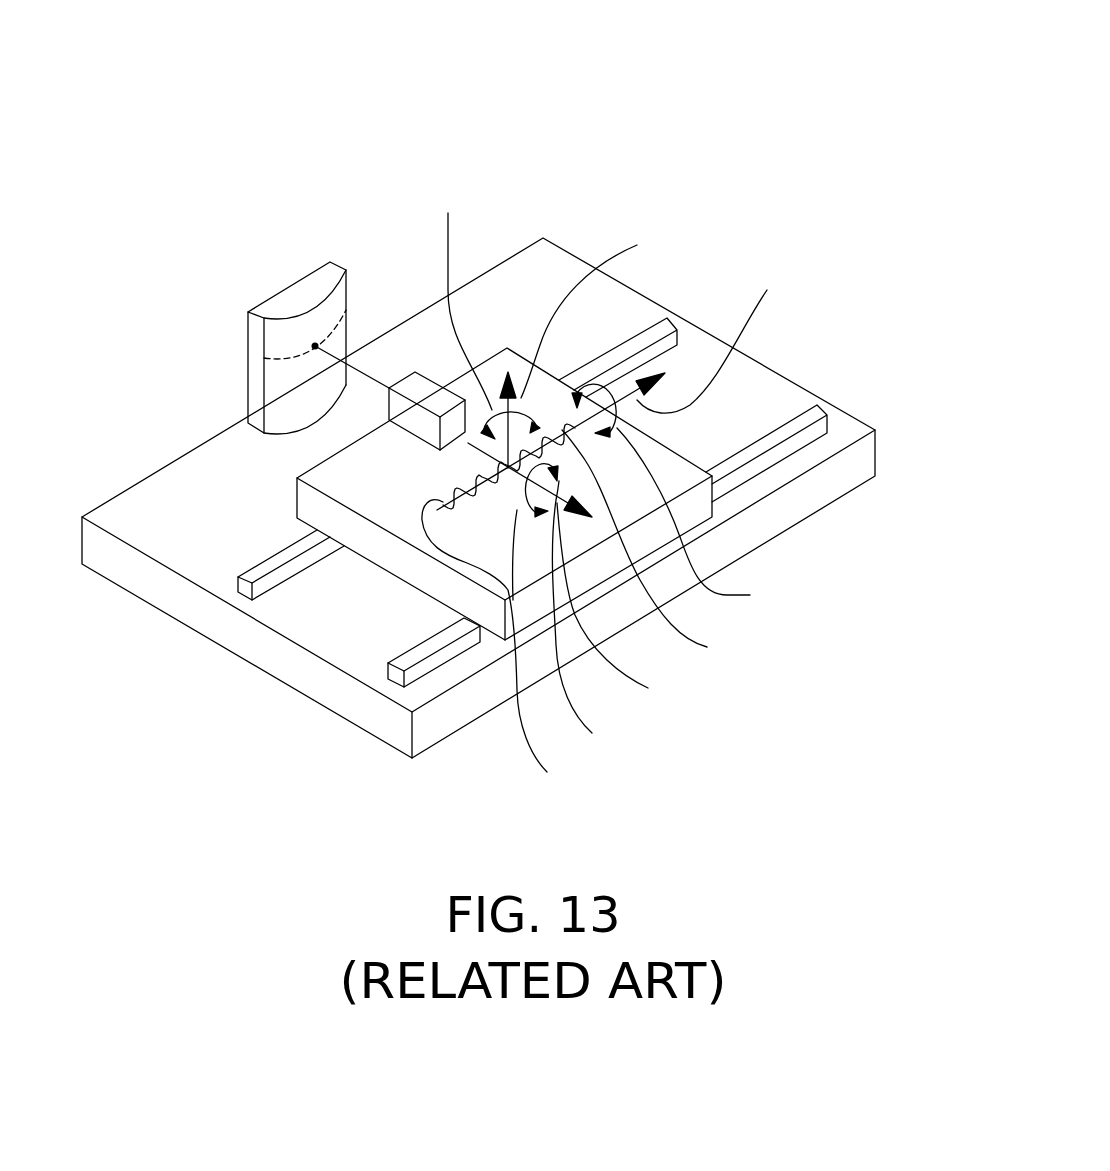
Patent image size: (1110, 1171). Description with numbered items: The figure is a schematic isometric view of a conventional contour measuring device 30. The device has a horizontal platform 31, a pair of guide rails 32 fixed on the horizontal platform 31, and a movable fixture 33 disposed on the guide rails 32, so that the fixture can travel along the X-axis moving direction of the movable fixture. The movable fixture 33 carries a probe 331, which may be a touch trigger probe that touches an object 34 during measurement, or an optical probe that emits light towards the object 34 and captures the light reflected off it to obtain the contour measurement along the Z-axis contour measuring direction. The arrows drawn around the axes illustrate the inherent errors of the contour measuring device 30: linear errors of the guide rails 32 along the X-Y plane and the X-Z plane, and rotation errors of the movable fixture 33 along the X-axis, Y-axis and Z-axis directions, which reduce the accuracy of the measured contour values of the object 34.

The contour measuring device 30 is at (528, 31).
The horizontal platform 31 is at (205, 470).
The guide rails 32 is at (250, 587).
The movable fixture 33 is at (400, 560).
The probe 331 is at (423, 385).
The object 34 is at (302, 297).